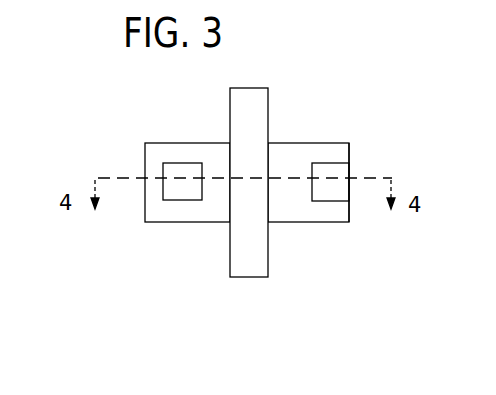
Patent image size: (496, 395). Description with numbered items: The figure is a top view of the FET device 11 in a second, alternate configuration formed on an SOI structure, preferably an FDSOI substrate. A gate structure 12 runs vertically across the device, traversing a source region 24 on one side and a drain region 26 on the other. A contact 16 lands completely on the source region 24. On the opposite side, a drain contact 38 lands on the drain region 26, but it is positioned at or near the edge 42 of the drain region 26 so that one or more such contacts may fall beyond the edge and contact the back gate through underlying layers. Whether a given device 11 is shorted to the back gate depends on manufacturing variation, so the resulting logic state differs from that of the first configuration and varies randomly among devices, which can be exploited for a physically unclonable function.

The FET device 11 is at (378, 52).
The gate structure 12 is at (263, 105).
The contact 16 is at (183, 200).
The source region 24 is at (203, 153).
The drain region 26 is at (315, 148).
The drain contact 38 is at (330, 201).
The edge 42 is at (350, 156).